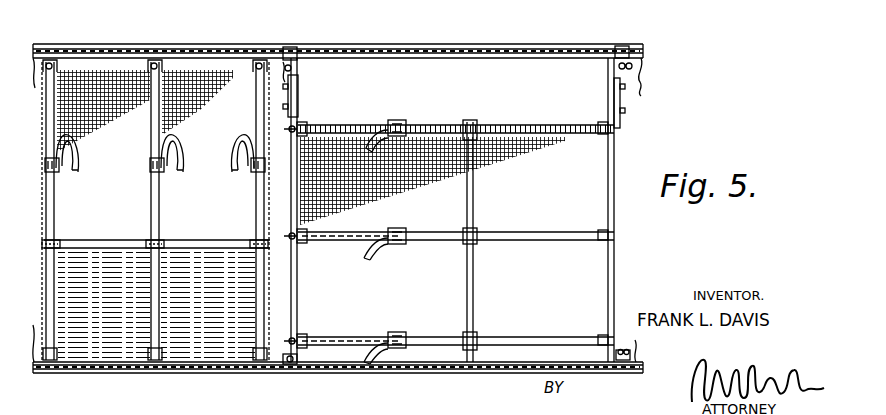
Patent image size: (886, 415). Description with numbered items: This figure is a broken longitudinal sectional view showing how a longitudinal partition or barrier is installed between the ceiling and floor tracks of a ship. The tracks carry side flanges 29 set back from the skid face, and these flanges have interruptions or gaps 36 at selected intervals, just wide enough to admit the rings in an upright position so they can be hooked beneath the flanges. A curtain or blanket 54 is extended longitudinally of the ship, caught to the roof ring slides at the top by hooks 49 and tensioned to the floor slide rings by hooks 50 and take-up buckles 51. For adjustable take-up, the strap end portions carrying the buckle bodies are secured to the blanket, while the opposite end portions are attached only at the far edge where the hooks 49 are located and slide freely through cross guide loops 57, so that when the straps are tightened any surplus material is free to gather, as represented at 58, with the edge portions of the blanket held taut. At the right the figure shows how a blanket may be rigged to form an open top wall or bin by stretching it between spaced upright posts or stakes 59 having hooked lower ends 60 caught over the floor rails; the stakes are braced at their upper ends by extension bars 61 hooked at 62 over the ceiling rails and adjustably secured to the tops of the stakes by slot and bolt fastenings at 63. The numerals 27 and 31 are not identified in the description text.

The upper track channel 27 is at (482, 55).
The side flanges 29 is at (521, 52).
The post 31 is at (50, 62).
The interruptions or gaps 36 is at (312, 50).
The hooks 49 is at (57, 66).
The hooks 50 is at (614, 128).
The take-up buckles 51 is at (148, 169).
The curtain or blanket 54 is at (200, 85).
The cross guide loops 57 is at (58, 240).
The gathered surplus portion of blanket 58 is at (155, 305).
The upright posts or stakes 59 is at (297, 292).
The hooked lower ends 60 is at (612, 362).
The extension bars 61 is at (294, 66).
The hook 62 is at (288, 52).
The slot and bolt fastenings 63 is at (296, 107).